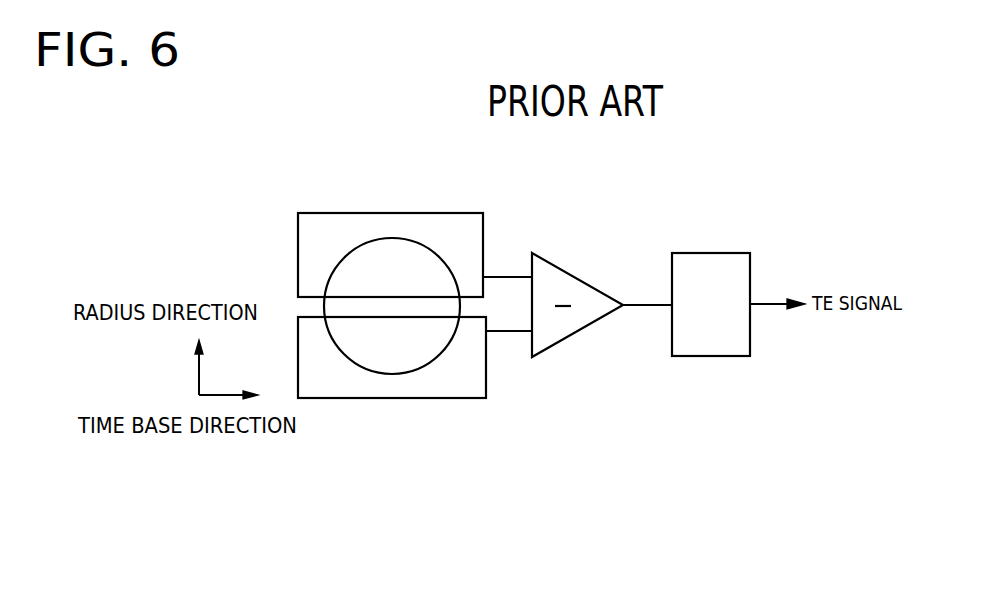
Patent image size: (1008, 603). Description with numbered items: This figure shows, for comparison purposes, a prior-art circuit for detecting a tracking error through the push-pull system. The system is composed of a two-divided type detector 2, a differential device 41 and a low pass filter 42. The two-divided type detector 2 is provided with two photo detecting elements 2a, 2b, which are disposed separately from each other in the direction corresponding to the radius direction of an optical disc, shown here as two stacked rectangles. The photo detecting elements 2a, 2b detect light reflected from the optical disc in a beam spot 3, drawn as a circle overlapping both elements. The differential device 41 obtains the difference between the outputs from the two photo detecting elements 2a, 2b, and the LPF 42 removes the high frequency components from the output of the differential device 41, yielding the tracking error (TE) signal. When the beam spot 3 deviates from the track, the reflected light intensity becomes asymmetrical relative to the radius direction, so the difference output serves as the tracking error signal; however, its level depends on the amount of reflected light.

The two-divided type detector 2 is at (336, 305).
The photo detecting element 2a is at (305, 235).
The photo detecting element 2b is at (306, 332).
The beam spot 3 is at (419, 252).
The differential device 41 is at (588, 282).
The LPF (low pass filter) 42 is at (693, 253).